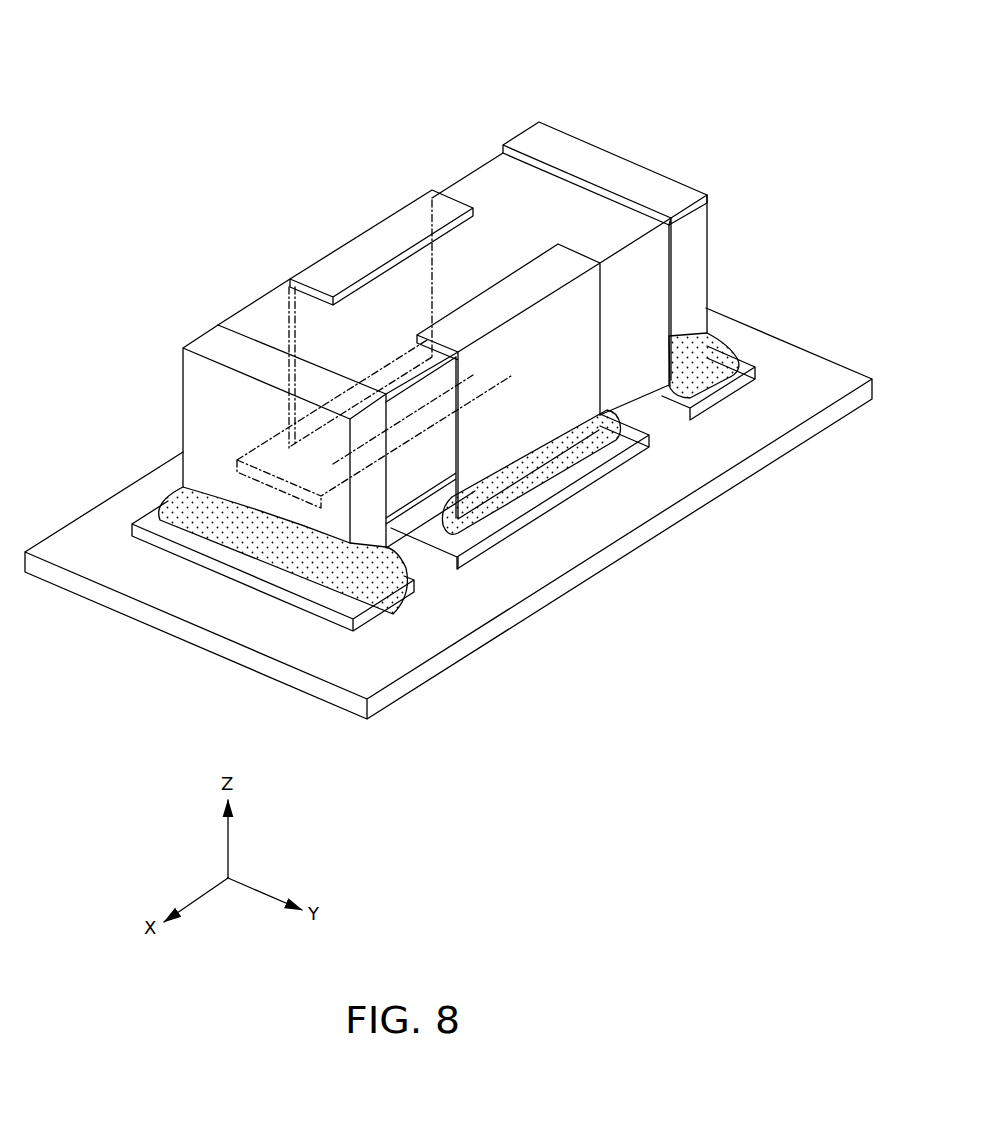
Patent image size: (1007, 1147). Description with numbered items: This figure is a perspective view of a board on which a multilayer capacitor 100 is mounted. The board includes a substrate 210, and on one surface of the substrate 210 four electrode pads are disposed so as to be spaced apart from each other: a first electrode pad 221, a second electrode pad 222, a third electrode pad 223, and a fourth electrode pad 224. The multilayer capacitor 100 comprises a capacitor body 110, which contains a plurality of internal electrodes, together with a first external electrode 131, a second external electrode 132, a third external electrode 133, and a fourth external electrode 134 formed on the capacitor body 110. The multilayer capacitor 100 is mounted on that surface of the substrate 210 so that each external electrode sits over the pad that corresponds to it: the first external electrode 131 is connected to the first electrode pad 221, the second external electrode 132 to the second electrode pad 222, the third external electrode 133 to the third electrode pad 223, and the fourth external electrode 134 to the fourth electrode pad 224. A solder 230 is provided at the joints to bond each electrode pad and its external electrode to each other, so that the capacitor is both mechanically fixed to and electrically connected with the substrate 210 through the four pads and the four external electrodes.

The multilayer capacitor 100 is at (575, 122).
The capacitor body 110 is at (491, 198).
The first external electrode 131 is at (214, 457).
The second external electrode 132 is at (631, 172).
The third external electrode 133 is at (498, 418).
The fourth external electrode 134 is at (370, 256).
The substrate 210 is at (775, 344).
The first electrode pad 221 is at (357, 610).
The second electrode pad 222 is at (708, 400).
The third electrode pad 223 is at (483, 553).
The fourth electrode pad 224 is at (237, 456).
The solder 230 is at (262, 540).